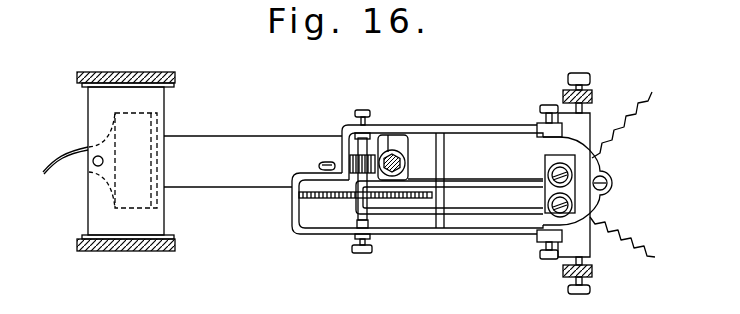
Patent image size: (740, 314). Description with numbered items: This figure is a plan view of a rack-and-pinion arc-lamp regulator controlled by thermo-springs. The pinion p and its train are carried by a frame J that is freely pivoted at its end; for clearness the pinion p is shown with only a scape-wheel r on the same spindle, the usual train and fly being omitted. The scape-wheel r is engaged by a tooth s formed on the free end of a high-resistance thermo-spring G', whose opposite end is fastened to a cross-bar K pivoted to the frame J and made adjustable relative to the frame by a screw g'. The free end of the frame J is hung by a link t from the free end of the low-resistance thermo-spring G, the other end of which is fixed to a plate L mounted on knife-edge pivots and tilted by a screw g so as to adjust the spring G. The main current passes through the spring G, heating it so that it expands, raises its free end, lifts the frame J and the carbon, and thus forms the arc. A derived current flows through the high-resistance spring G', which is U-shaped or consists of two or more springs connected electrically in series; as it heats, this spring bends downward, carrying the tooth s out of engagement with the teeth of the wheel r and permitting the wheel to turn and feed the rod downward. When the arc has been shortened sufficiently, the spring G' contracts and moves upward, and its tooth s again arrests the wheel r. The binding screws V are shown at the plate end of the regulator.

The plate L is at (126, 161).
The screw g is at (73, 166).
The low-resistance thermo-spring G is at (253, 155).
The frame J is at (427, 182).
The pinion p is at (351, 160).
The link t is at (320, 164).
The scape-wheel r is at (365, 201).
The tooth s is at (358, 199).
The high-resistance thermo-spring G' is at (449, 197).
The cross-bar K is at (590, 155).
The screw g' is at (622, 174).
The binding screws V is at (586, 186).